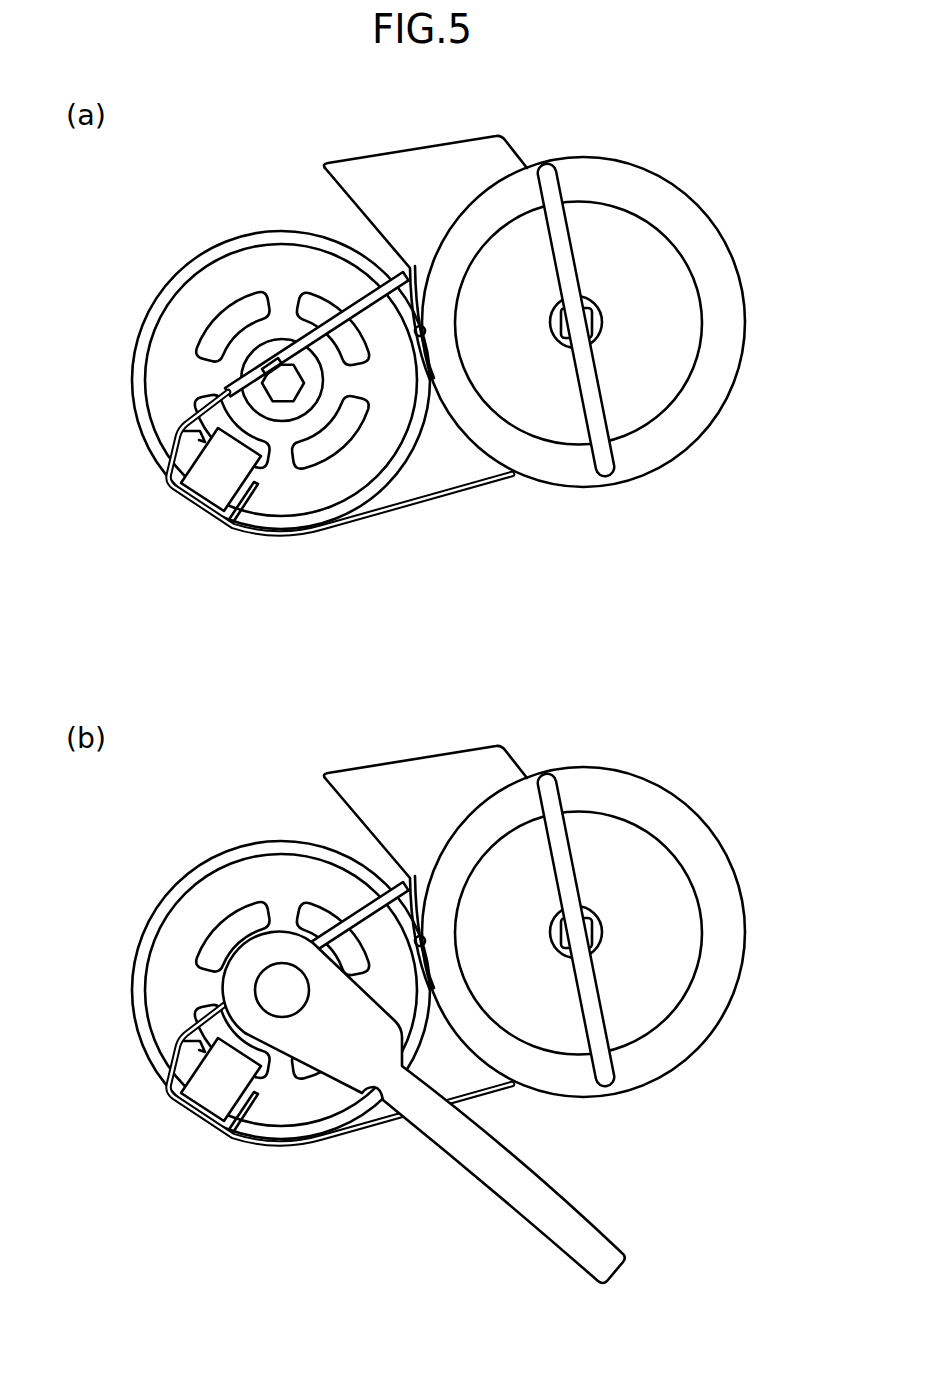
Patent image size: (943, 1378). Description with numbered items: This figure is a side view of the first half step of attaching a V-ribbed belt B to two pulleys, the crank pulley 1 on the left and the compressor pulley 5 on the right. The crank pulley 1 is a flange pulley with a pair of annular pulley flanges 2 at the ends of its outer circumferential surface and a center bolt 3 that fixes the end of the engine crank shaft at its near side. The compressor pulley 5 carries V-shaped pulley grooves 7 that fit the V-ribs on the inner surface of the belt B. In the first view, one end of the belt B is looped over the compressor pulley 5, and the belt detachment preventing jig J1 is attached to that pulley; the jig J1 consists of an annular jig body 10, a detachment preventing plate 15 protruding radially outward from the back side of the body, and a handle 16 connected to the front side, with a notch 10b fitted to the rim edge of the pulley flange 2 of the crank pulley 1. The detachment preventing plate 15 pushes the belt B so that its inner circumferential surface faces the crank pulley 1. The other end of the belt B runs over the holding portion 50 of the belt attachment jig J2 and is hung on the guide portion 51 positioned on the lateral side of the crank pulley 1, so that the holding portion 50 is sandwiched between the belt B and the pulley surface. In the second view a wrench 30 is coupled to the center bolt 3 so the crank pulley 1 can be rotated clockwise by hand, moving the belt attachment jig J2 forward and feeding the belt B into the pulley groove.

The crank pulley 1 is at (171, 373).
The pulley flange 2 is at (232, 244).
The center bolt 3 is at (301, 382).
The compressor pulley 5 is at (672, 287).
The pulley grooves 7 is at (604, 323).
The jig body 10 is at (732, 334).
The notch 10b is at (425, 333).
The detachment preventing plate 15 is at (392, 172).
The handle 16 is at (607, 471).
The wrench 30 is at (424, 1107).
The holding portion 50 is at (178, 498).
The guide portion 51 is at (178, 444).
The belt B is at (366, 302).
The belt detachment preventing jig J1 is at (603, 151).
The belt attachment jig J2 is at (204, 524).